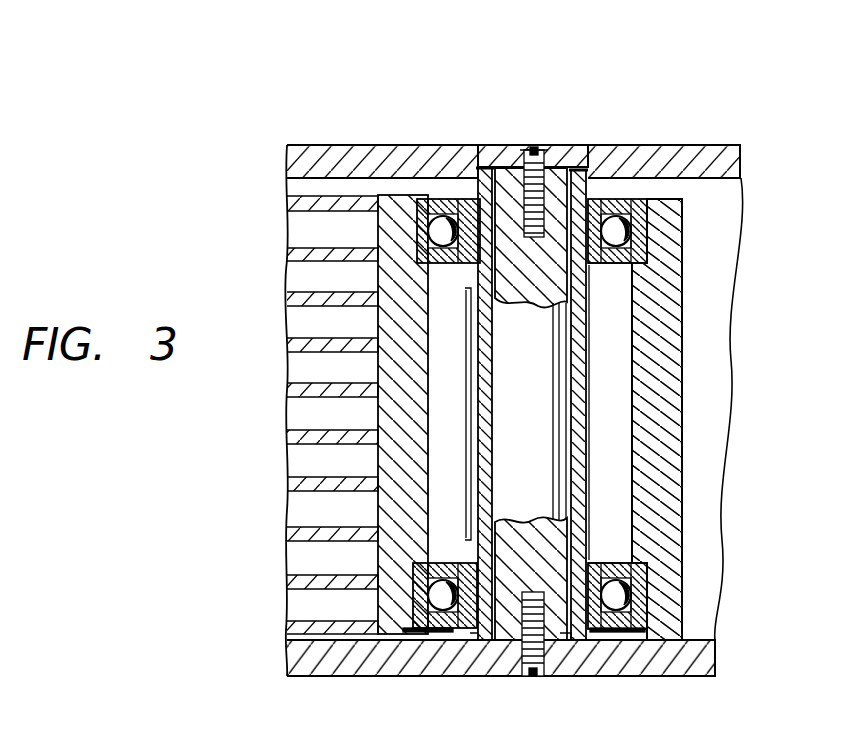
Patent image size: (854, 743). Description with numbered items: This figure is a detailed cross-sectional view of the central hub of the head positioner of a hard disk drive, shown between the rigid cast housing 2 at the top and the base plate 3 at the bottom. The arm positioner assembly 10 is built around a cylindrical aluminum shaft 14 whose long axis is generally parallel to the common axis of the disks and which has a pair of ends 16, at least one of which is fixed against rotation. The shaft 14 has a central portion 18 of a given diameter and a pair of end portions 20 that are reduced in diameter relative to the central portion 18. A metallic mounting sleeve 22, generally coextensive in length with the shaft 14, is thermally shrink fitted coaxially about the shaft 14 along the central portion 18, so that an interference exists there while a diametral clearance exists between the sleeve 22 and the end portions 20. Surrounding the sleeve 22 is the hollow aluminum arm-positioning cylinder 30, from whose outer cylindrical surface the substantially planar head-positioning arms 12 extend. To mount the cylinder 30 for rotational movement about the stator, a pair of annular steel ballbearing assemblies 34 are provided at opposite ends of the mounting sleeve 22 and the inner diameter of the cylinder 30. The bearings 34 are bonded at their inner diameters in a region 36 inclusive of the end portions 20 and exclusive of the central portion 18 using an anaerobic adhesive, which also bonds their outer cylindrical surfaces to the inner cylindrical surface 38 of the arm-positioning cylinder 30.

The housing 2 is at (287, 157).
The base plate 3 is at (303, 660).
The arm positioner assembly 10 is at (496, 120).
The head-positioning arms 12 is at (285, 340).
The shaft 14 is at (529, 404).
The ends 16 is at (551, 147).
The central portion 18 is at (469, 406).
The end portions 20 is at (597, 270).
The mounting sleeve 22 is at (596, 448).
The arm-positioning cylinder 30 is at (668, 424).
The ballbearing assemblies 34 is at (427, 200).
The region 36 is at (603, 199).
The inner cylindrical surface 38 is at (639, 214).